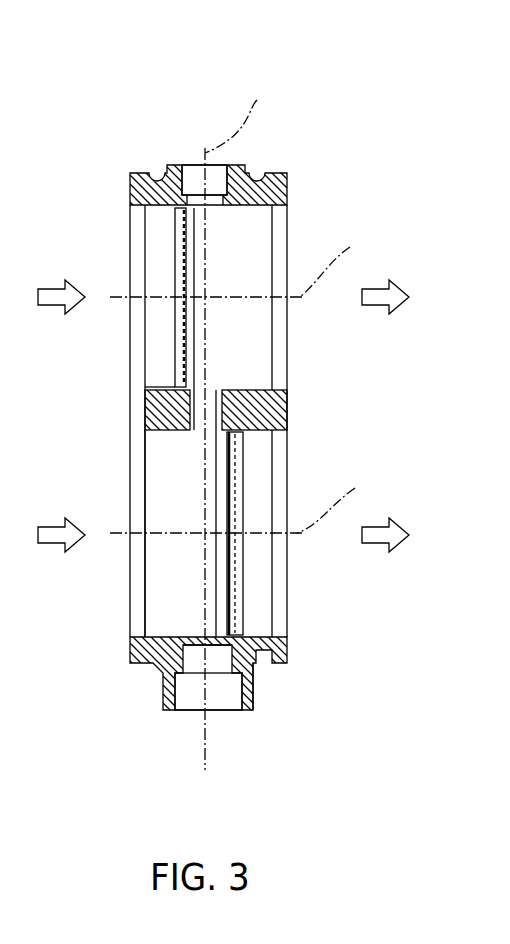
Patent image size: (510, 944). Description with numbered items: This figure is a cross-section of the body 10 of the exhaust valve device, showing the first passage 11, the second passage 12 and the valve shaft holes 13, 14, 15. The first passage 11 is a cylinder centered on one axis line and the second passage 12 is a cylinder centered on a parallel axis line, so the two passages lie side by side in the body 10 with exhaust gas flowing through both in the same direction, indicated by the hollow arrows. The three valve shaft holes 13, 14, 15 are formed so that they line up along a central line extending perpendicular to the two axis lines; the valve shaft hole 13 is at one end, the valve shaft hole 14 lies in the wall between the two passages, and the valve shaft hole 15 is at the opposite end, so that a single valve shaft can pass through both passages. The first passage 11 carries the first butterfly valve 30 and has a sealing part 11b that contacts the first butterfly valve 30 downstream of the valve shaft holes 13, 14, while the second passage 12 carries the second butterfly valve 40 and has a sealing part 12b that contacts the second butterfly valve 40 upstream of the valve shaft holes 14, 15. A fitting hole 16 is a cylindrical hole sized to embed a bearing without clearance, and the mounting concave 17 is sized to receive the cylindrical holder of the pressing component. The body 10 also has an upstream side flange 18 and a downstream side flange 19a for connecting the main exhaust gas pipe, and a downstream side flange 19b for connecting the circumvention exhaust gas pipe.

The body 10 is at (320, 157).
The first passage 11 is at (163, 628).
The sealing part 11b is at (250, 660).
The second passage 12 is at (157, 208).
The sealing part 12b is at (175, 383).
The valve shaft hole 13 is at (163, 673).
The valve shaft hole 14 is at (195, 430).
The valve shaft hole 15 is at (193, 167).
The fitting hole 16 is at (218, 167).
The mounting concave 17 is at (234, 698).
The upstream side flange 18 is at (128, 570).
The downstream side flange 19a is at (290, 590).
The downstream side flange 19b is at (287, 208).
The first butterfly valve 30 is at (238, 485).
The second butterfly valve 40 is at (173, 260).